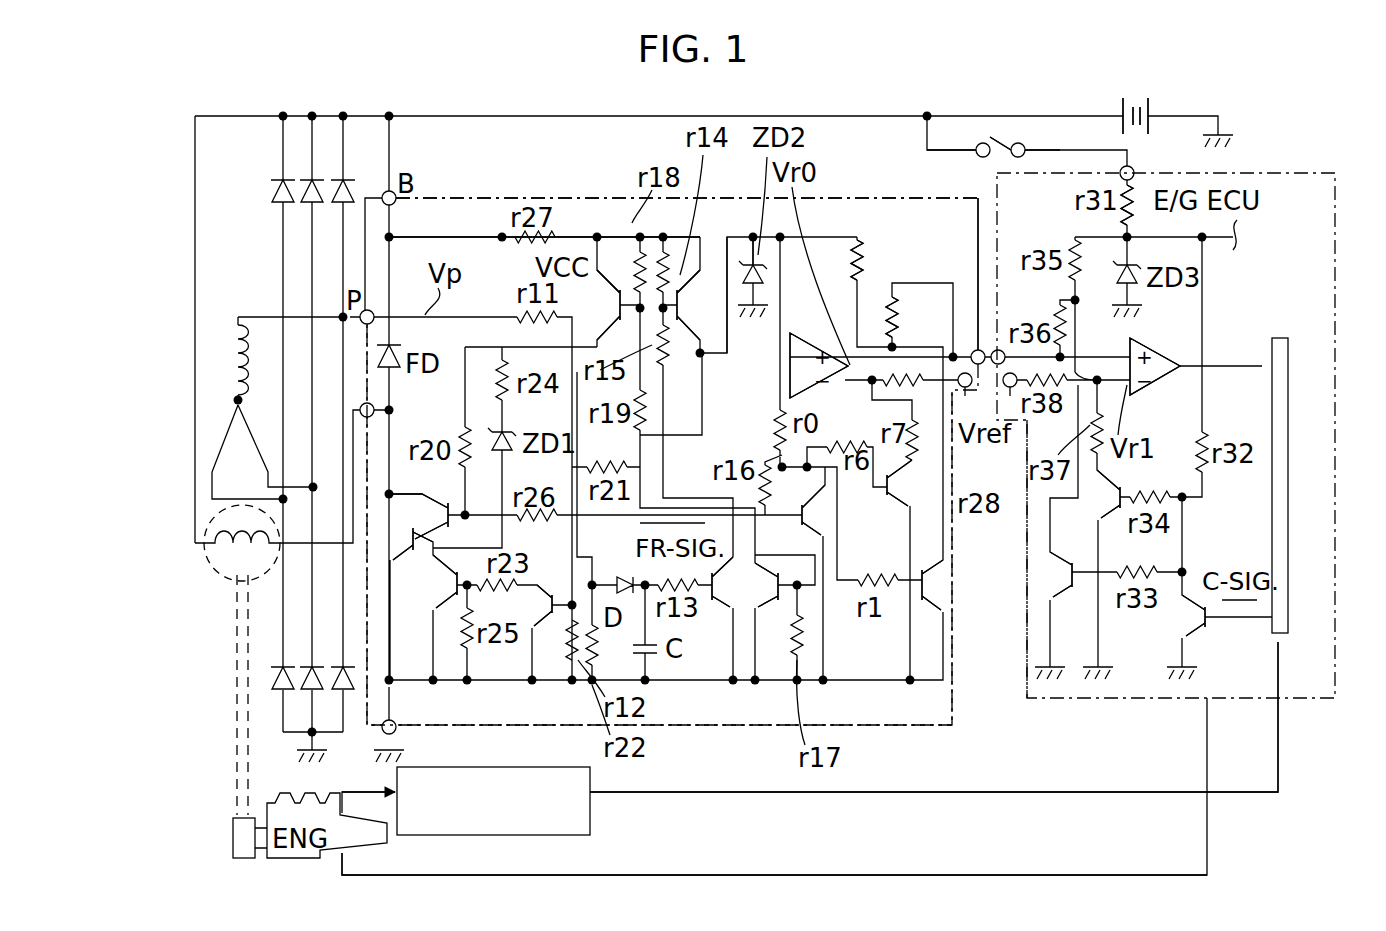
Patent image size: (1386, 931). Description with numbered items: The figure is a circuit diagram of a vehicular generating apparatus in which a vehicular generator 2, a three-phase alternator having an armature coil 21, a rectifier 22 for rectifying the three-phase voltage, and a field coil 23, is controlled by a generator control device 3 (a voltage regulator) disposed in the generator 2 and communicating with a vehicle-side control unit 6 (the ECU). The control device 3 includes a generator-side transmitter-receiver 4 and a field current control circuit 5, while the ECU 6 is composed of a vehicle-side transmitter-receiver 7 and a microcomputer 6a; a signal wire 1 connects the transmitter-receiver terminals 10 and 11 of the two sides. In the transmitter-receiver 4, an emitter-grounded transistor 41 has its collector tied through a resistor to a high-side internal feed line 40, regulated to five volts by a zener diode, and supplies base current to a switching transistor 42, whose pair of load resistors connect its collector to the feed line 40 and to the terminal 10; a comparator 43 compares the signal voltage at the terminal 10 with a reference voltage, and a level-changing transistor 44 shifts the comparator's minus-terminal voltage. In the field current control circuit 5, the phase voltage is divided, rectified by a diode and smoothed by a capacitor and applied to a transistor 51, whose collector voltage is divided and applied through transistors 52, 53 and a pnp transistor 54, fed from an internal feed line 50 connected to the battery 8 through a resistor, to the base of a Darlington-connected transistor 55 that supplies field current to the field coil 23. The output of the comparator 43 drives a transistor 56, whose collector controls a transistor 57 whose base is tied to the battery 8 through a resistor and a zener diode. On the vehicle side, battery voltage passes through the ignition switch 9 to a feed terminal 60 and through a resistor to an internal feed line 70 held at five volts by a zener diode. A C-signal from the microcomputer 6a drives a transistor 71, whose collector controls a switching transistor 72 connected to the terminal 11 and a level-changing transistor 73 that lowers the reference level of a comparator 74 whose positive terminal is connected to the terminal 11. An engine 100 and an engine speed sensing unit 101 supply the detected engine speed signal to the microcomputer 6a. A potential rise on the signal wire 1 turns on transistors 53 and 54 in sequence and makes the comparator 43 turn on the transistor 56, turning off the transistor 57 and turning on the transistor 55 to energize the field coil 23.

The signal wire 1 is at (988, 197).
The vehicular generator 2 is at (230, 300).
The generator control device 3 is at (850, 197).
The generator-side transmitter-receiver 4 is at (923, 278).
The field current control circuit 5 is at (578, 212).
The vehicle-side control unit 6 is at (1335, 290).
The microcomputer 6a is at (1290, 440).
The vehicle-side transmitter-receiver 7 is at (1140, 645).
The battery 8 is at (1100, 117).
The ignition switch 9 is at (985, 138).
The transmitter-receiver terminal 10 is at (972, 352).
The transmitter-receiver terminal 11 is at (1000, 352).
The armature coil 21 is at (235, 398).
The rectifier 22 is at (360, 172).
The field coil 23 is at (233, 570).
The internal feed line 40 is at (727, 238).
The transistor 41 is at (820, 513).
The transistor 42 is at (950, 608).
The comparator 43 is at (790, 336).
The transistor 44 is at (905, 480).
The internal feed line 50 is at (570, 235).
The transistor 51 is at (728, 655).
The transistor 52 is at (700, 290).
The transistor 53 is at (778, 655).
The pnp transistor 54 is at (610, 295).
The Darlington-connected transistor 55 is at (415, 565).
The transistor 56 is at (535, 655).
The transistor 57 is at (433, 655).
The feed terminal 60 is at (1134, 170).
The internal feed line 70 is at (1092, 233).
The transistor 71 is at (1197, 628).
The transistor 72 is at (1050, 562).
The transistor 73 is at (1100, 512).
The comparator 74 is at (1157, 360).
The engine 100 is at (380, 840).
The engine speed sensing unit 101 is at (590, 838).